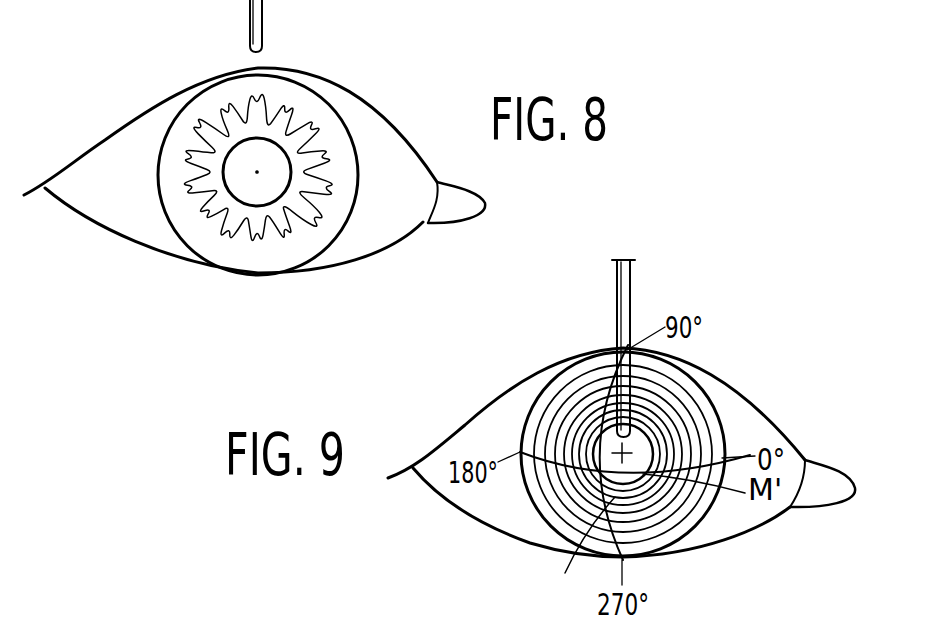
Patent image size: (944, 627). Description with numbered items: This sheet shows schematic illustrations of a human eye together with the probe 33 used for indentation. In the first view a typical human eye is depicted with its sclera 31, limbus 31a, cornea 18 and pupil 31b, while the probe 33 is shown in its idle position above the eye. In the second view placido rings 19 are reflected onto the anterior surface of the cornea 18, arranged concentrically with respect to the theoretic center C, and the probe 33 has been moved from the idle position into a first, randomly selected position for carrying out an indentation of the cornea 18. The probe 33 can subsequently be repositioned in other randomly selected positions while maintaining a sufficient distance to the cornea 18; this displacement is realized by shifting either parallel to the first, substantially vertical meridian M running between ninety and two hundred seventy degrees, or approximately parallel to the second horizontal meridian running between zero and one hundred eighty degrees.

In FIG. 8, the cornea 18 is at (212, 247).
In FIG. 9, the cornea 18 is at (556, 515).
In FIG. 9, the placido rings 19 is at (540, 497).
In FIG. 8, the sclera 31 is at (124, 160).
In FIG. 8, the limbus 31a is at (158, 208).
In FIG. 8, the pupil 31b is at (250, 160).
In FIG. 8, the probe 33 is at (262, 13).
In FIG. 9, the probe 33 is at (631, 290).
In FIG. 9, the theoretic center C is at (627, 458).
In FIG. 9, the first, substantially vertical meridian M is at (585, 552).